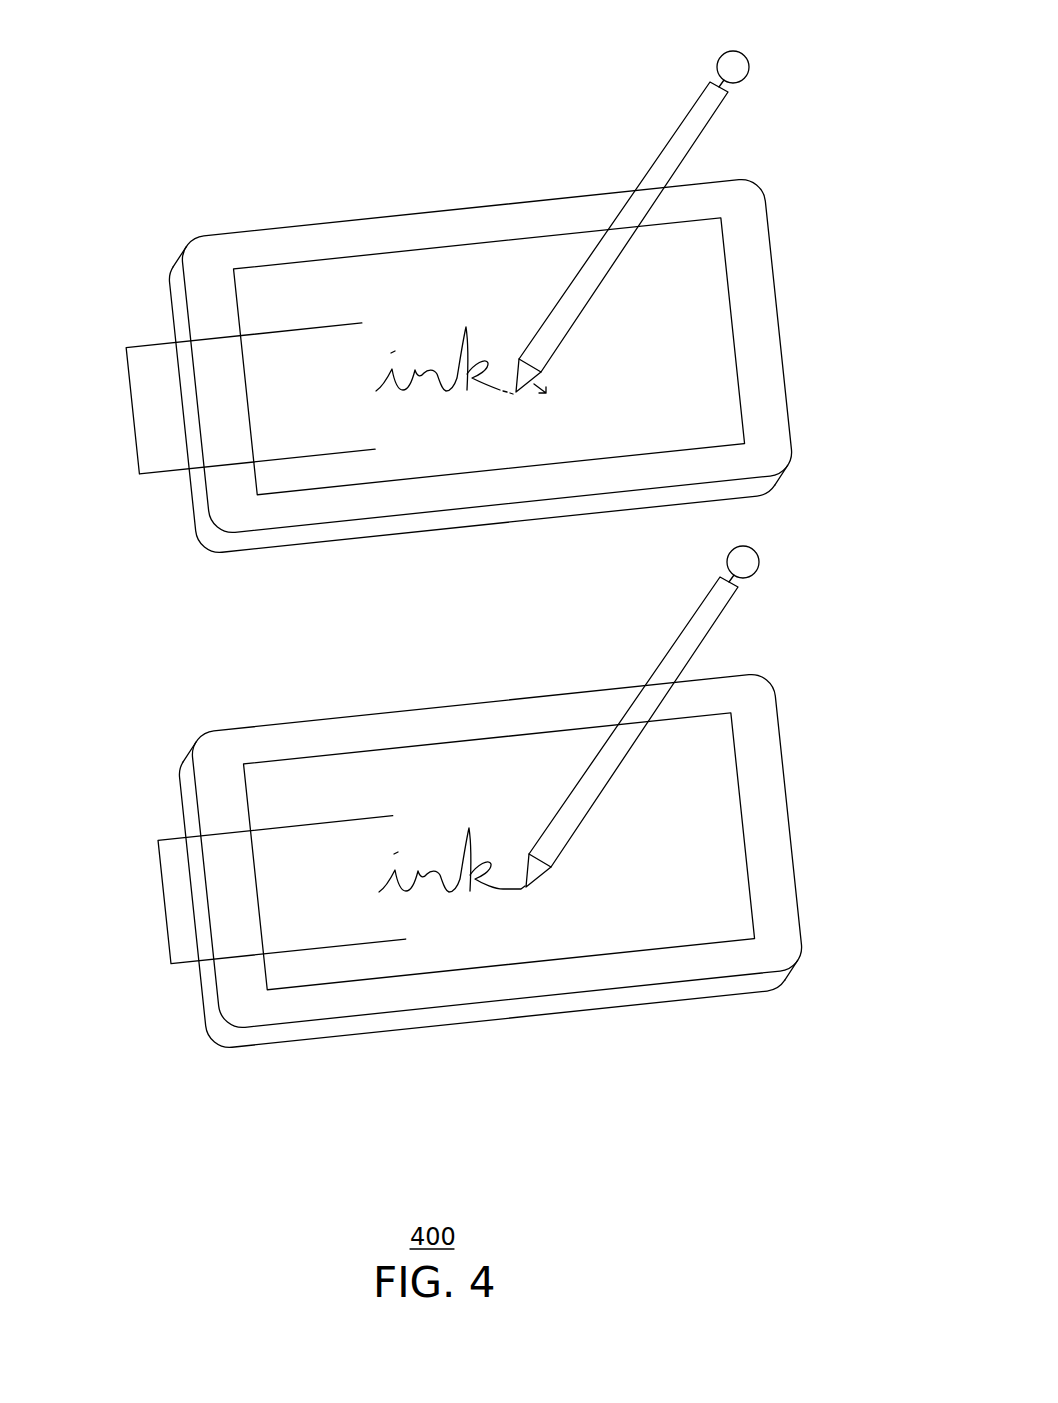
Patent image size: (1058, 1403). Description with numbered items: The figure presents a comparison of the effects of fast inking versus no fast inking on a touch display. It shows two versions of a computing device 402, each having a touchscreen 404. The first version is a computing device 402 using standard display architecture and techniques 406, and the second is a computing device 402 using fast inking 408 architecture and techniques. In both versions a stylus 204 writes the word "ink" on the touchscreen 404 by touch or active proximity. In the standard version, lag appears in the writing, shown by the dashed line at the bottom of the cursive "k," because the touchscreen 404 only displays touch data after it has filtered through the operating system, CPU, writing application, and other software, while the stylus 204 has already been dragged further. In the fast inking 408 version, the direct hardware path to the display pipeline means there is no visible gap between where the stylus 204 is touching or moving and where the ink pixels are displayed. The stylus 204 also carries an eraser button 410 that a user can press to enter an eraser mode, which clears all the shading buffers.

The computing device 402 is at (232, 233).
The touchscreen 404 is at (398, 252).
The standard display architecture and techniques 406 is at (132, 410).
The fast inking architecture and techniques 408 is at (166, 908).
The stylus 204 is at (709, 120).
The eraser button 410 is at (721, 56).